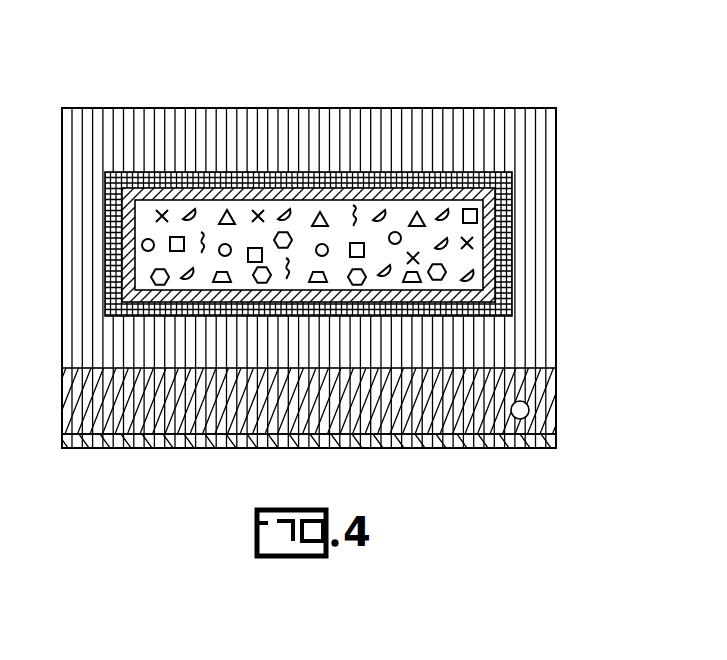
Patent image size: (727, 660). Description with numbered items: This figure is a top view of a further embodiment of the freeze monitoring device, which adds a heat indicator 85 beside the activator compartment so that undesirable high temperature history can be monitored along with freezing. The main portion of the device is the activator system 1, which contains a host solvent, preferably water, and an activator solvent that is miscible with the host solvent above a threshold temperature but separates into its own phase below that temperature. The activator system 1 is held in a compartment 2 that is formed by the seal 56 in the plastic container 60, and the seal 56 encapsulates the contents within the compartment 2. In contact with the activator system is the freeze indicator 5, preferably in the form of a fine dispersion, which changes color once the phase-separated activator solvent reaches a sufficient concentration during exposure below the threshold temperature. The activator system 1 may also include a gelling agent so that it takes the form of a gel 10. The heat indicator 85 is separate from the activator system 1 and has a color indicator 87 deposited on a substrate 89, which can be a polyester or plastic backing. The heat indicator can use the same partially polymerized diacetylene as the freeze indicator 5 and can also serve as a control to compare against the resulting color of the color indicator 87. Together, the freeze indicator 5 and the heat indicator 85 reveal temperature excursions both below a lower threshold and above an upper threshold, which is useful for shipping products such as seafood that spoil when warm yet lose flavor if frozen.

The activator system 1 is at (341, 212).
The plastic container 60 is at (62, 212).
The seal 56 is at (506, 185).
The freeze indicator 5 is at (478, 218).
The gel 10 is at (483, 280).
The compartment 2 is at (486, 305).
The heat indicator 85 is at (556, 392).
The color indicator 87 is at (529, 410).
The substrate 89 is at (556, 446).